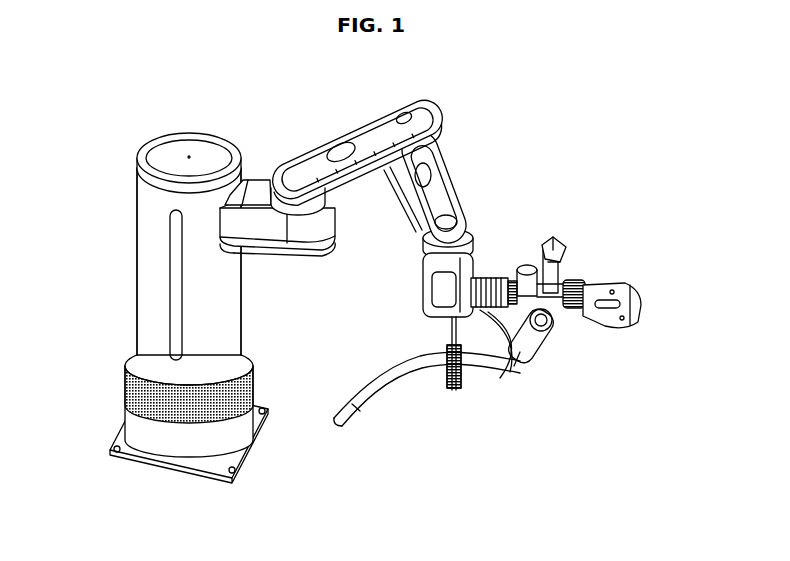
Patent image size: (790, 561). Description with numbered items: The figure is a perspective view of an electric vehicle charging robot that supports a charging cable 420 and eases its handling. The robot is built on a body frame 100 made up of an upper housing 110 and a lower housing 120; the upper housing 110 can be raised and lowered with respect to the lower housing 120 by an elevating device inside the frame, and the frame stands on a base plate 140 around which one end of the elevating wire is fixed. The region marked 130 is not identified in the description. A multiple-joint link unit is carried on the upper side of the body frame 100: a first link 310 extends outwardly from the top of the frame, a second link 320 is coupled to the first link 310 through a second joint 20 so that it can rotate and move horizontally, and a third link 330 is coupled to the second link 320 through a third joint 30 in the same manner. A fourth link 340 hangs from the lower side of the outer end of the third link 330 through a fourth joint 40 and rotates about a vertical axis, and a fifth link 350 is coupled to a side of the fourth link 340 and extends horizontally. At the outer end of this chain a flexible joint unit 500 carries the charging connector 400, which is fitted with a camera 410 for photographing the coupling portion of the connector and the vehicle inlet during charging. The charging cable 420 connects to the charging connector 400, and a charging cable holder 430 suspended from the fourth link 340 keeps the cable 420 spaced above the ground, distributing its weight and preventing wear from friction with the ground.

The body frame 100 is at (128, 162).
The upper housing 110 is at (147, 241).
The lower housing 120 is at (131, 420).
The base band 130 is at (126, 381).
The base plate 140 is at (136, 456).
The second joint 20 is at (298, 251).
The third joint 30 is at (353, 190).
The first link 310 is at (256, 193).
The second link 320 is at (341, 128).
The third link 330 is at (434, 173).
The fourth link 340 is at (431, 293).
The fifth link 350 is at (494, 340).
The fourth joint 40 is at (468, 207).
The charging connector 400 is at (607, 283).
The camera 410 is at (553, 237).
The charging cable 420 is at (379, 398).
The charging cable holder 430 is at (447, 333).
The flexible joint unit 500 is at (512, 366).